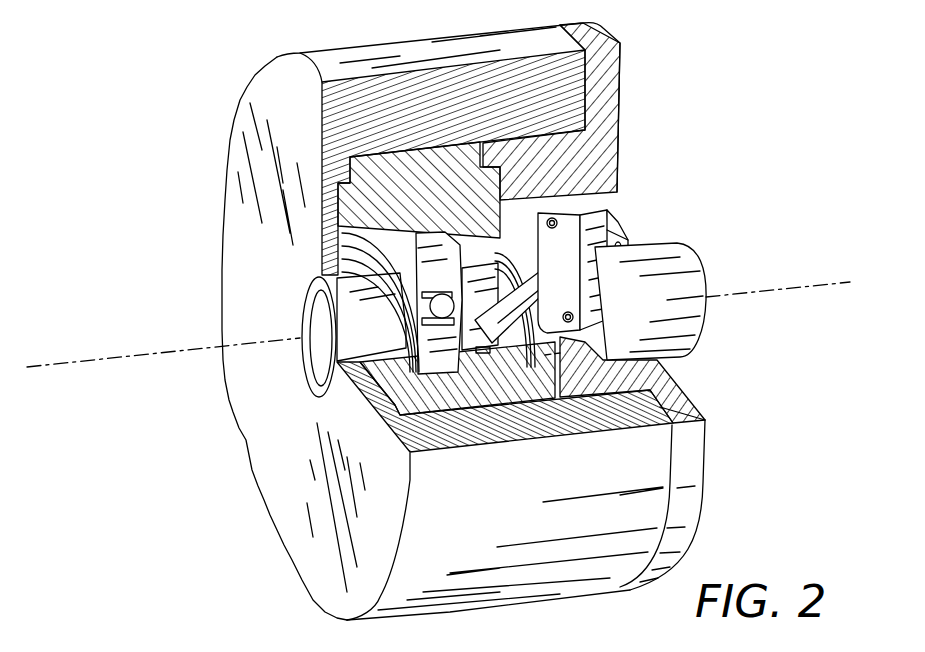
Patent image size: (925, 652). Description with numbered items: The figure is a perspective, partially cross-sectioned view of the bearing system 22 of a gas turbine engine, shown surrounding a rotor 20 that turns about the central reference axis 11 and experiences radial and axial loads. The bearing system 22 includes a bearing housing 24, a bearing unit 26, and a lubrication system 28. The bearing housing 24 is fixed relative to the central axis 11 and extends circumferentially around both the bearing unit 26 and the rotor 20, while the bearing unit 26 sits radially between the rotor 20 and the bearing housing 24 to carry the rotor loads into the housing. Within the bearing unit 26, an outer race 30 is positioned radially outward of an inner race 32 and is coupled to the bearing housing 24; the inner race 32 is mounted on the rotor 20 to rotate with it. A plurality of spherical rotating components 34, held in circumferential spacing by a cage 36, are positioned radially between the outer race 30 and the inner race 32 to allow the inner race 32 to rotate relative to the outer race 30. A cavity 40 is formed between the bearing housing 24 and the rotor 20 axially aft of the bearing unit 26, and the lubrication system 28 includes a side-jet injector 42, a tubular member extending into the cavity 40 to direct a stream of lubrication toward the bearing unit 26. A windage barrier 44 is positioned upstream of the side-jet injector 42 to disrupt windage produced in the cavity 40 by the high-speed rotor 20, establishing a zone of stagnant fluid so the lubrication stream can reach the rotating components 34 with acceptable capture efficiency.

The central reference axis 11 is at (820, 280).
The rotor 20 is at (698, 226).
The bearing system 22 is at (156, 108).
The bearing housing 24 is at (256, 250).
The bearing unit 26 is at (374, 363).
The lubrication system 28 is at (643, 212).
The outer race 30 is at (352, 243).
The inner race 32 is at (366, 276).
The rotating components 34 is at (398, 314).
The cage 36 is at (356, 260).
The cavity 40 is at (475, 236).
The side-jet injector 42 is at (517, 352).
The windage barrier 44 is at (482, 378).